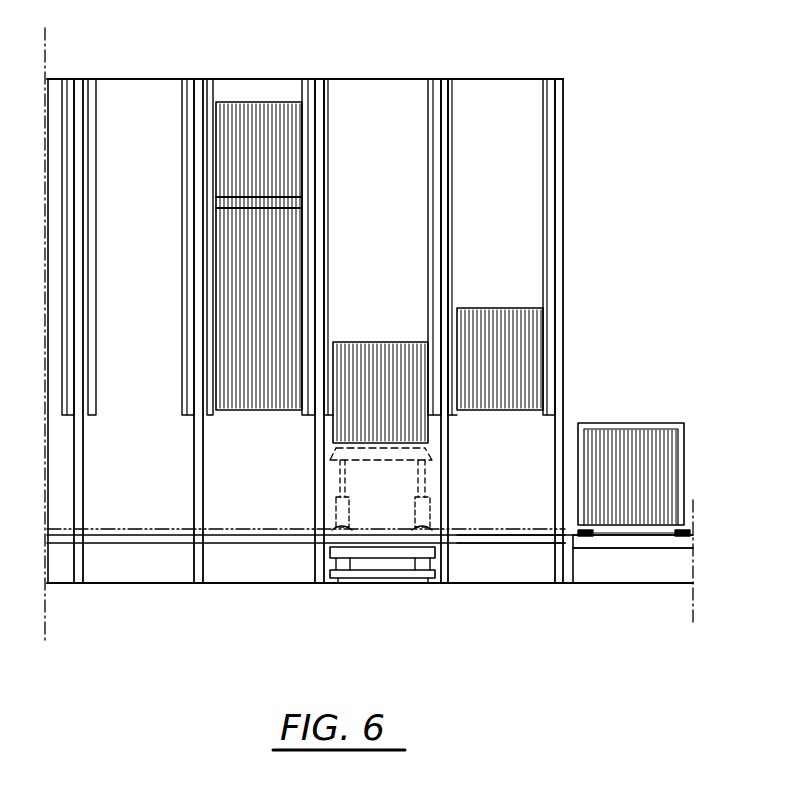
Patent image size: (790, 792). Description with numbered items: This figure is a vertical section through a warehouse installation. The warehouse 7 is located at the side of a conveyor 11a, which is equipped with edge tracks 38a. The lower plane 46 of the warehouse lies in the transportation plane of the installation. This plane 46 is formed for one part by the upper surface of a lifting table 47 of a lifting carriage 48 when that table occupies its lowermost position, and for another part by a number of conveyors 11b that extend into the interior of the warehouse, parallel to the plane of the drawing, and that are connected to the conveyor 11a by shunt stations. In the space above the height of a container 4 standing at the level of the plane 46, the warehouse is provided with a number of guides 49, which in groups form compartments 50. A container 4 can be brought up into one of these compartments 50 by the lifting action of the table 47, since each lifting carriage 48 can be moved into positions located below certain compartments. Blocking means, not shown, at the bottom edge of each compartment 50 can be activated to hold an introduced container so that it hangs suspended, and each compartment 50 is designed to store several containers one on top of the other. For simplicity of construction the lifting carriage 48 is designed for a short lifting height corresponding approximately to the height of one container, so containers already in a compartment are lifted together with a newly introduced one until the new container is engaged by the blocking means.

The container 4 is at (608, 448).
The warehouse 7 is at (510, 69).
The conveyor 11a is at (592, 543).
The conveyors 11b is at (503, 540).
The edge tracks 38a is at (676, 536).
The lower plane 46 is at (143, 527).
The lifting table 47 is at (413, 537).
The lifting carriage 48 is at (378, 591).
The guides 49 is at (93, 125).
The compartments 50 is at (140, 157).